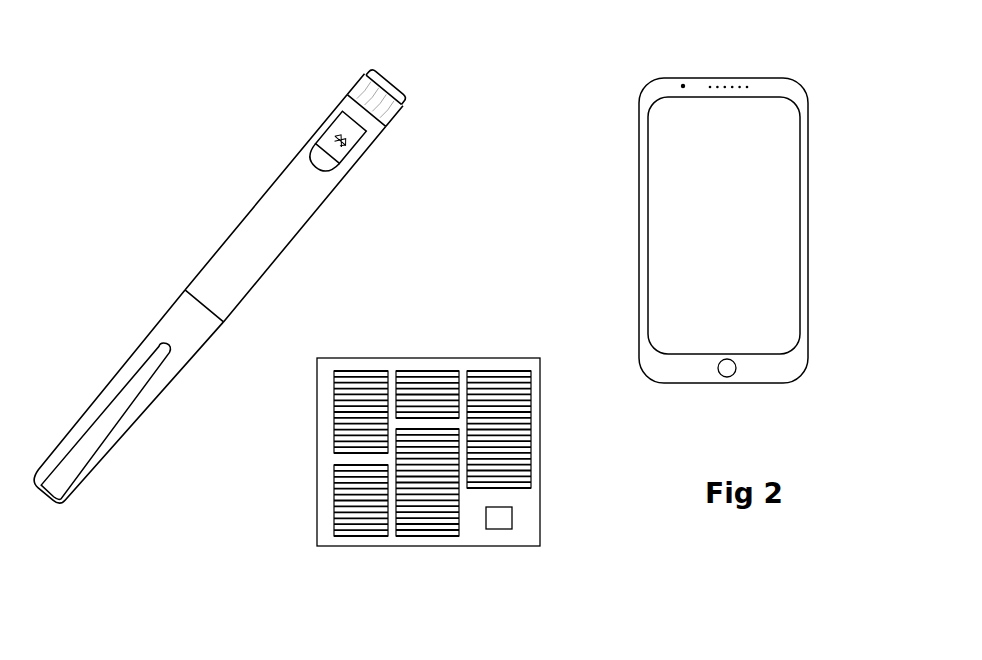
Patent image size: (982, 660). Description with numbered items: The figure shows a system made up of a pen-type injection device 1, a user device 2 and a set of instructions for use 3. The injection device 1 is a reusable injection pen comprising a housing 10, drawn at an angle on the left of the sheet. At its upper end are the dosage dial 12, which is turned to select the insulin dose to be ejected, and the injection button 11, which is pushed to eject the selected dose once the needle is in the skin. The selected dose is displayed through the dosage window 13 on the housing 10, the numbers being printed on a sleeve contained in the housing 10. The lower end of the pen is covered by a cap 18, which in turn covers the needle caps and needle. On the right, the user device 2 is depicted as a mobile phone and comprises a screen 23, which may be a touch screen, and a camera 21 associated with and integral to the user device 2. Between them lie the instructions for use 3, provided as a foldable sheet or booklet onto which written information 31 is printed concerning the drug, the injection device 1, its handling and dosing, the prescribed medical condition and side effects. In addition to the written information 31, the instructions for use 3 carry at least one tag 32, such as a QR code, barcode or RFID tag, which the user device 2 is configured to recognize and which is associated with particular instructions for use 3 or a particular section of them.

The injection device 1 is at (190, 122).
The housing 10 is at (252, 211).
The injection button 11 is at (404, 63).
The dosage dial 12 is at (340, 77).
The dosage window 13 is at (320, 139).
The cap 18 is at (167, 318).
The user device 2 is at (828, 236).
The camera 21 is at (683, 86).
The screen 23 is at (795, 157).
The instructions for use 3 is at (538, 358).
The written information 31 is at (334, 442).
The tag 32 is at (502, 519).